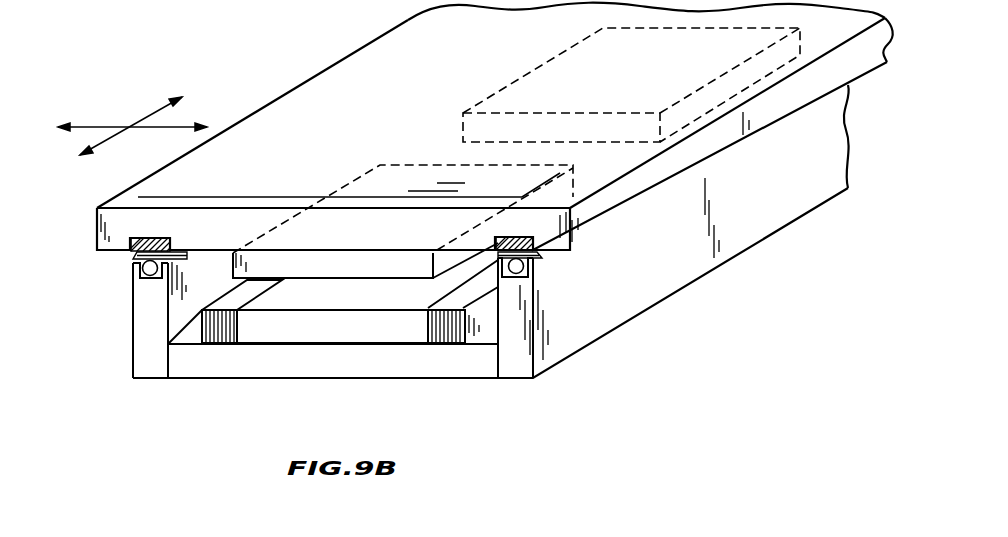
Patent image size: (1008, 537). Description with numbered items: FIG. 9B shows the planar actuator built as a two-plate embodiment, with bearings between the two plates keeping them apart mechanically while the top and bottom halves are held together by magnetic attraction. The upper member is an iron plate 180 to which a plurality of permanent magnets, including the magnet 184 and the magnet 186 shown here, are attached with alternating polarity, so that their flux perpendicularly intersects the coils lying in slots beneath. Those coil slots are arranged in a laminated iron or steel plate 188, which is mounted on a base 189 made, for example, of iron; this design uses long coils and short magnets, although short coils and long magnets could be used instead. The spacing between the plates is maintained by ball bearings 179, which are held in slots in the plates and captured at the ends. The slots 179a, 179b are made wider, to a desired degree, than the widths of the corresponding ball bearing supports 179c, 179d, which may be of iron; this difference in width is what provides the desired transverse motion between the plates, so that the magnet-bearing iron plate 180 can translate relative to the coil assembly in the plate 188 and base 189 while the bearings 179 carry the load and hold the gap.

The iron plate 180 is at (323, 72).
The magnet 184 is at (572, 67).
The magnet 186 is at (383, 267).
The laminated iron or steel plate 188 is at (302, 332).
The base 189 is at (455, 365).
The ball bearings 179 is at (137, 270).
The slot 179a is at (133, 255).
The slot 179b is at (530, 262).
The ball bearing support 179c is at (140, 345).
The ball bearing support 179d is at (512, 363).